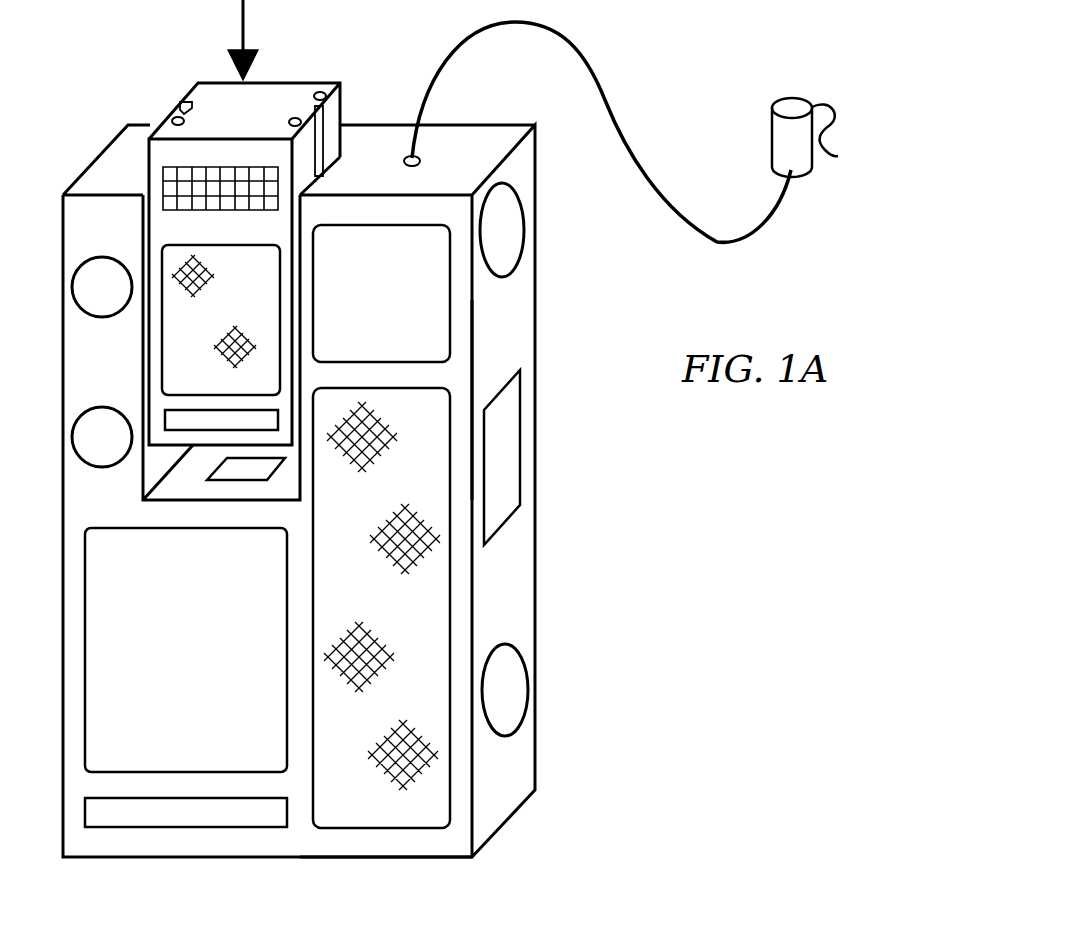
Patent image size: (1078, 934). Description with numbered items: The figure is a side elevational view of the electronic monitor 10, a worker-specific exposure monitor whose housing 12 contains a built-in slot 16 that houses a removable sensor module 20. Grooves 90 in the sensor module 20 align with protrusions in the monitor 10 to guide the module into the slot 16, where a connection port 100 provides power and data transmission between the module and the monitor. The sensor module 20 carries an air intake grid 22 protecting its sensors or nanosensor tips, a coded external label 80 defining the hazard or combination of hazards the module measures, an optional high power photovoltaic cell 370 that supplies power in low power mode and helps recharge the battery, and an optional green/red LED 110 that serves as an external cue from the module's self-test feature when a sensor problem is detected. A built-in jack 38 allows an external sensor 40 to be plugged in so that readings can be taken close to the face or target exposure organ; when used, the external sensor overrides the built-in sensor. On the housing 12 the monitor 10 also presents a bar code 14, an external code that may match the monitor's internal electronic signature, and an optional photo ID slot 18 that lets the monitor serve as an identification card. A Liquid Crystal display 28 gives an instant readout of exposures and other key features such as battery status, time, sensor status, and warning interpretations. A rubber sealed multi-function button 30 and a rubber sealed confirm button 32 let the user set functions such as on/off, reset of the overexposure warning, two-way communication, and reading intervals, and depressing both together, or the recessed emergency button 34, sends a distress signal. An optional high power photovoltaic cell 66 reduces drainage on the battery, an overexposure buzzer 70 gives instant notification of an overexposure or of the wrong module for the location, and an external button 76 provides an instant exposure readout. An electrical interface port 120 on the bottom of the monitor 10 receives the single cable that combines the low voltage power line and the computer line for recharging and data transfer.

The electronic monitor 10 is at (364, 491).
The housing 12 is at (510, 612).
The bar code 14 is at (155, 811).
The slot 16 is at (153, 463).
The photo ID slot 18 is at (186, 650).
The sensor module 20 is at (290, 230).
The air intake grid 22 is at (213, 167).
The Liquid Crystal display 28 is at (381, 293).
The multi-function button 30 is at (102, 287).
The confirm button 32 is at (102, 437).
The recessed emergency button 34 is at (503, 231).
The built-in jack 38 is at (420, 163).
The external sensor 40 is at (790, 103).
The photovoltaic cell 66 is at (381, 608).
The overexposure buzzer 70 is at (502, 430).
The external button 76 is at (510, 688).
The coded external label 80 is at (177, 418).
The grooves 90 is at (322, 107).
The connection port 100 is at (235, 480).
The green/red LED 110 is at (321, 92).
The electrical interface port 120 is at (346, 882).
The photovoltaic cell 370 is at (221, 320).